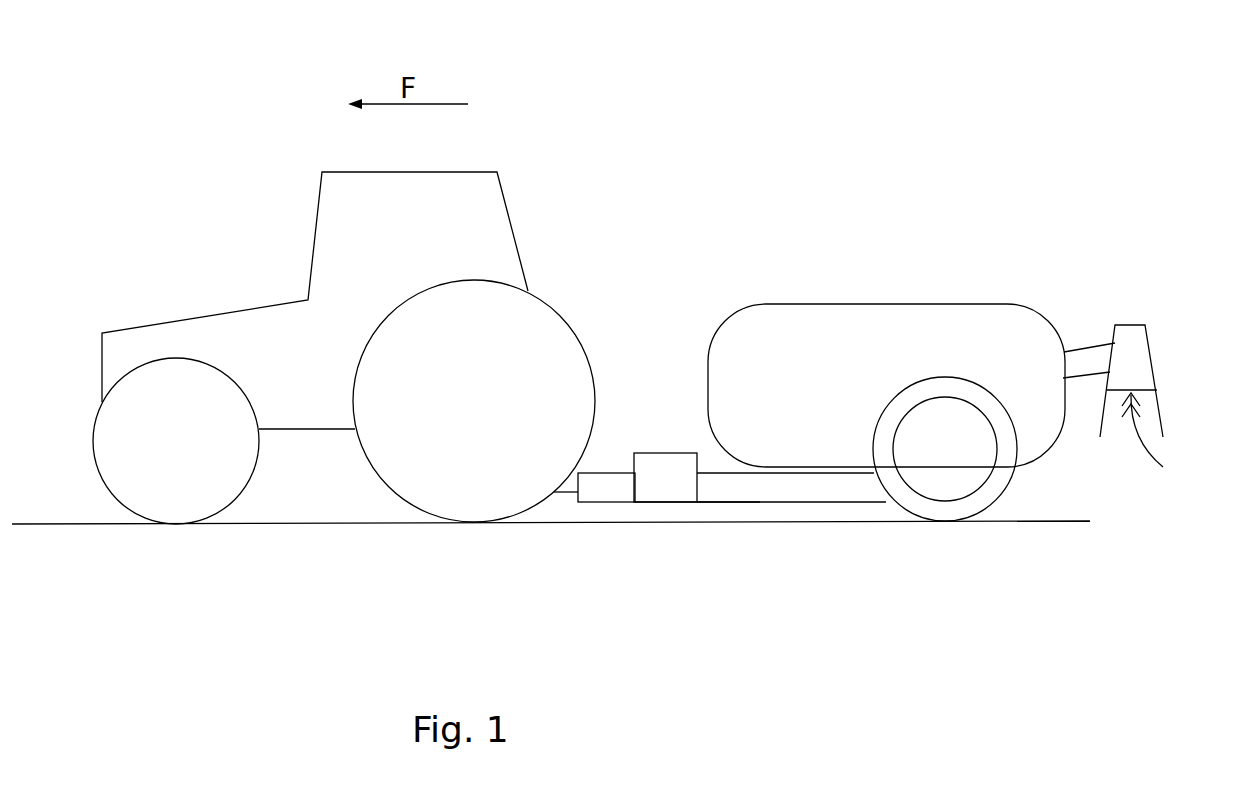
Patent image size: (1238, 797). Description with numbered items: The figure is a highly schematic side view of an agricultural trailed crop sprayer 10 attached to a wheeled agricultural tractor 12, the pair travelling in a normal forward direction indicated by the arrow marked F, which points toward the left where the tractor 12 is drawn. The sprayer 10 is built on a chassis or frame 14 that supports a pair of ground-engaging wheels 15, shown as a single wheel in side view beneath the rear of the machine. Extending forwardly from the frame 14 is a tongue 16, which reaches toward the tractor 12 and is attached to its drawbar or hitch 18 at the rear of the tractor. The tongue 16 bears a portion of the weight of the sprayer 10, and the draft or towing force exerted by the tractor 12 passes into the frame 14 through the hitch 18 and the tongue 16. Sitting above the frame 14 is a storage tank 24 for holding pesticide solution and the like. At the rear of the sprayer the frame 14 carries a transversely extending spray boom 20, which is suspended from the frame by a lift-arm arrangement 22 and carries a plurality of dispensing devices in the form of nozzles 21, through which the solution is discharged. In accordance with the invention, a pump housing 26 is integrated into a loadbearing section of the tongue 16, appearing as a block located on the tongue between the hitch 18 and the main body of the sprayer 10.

The agricultural trailed crop sprayer 10 is at (891, 404).
The agricultural tractor 12 is at (350, 187).
The chassis or frame 14 is at (830, 490).
The ground-engaging wheels 15 is at (993, 497).
The tongue 16 is at (705, 490).
The drawbar or hitch 18 is at (563, 500).
The spray boom 20 is at (1135, 325).
The nozzles 21 is at (1158, 446).
The lift-arm arrangement 22 is at (1090, 343).
The storage tank 24 is at (952, 322).
The pump housing 26 is at (658, 490).